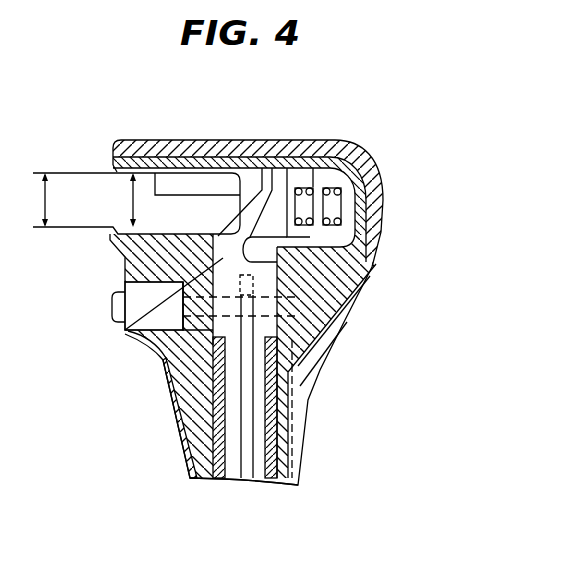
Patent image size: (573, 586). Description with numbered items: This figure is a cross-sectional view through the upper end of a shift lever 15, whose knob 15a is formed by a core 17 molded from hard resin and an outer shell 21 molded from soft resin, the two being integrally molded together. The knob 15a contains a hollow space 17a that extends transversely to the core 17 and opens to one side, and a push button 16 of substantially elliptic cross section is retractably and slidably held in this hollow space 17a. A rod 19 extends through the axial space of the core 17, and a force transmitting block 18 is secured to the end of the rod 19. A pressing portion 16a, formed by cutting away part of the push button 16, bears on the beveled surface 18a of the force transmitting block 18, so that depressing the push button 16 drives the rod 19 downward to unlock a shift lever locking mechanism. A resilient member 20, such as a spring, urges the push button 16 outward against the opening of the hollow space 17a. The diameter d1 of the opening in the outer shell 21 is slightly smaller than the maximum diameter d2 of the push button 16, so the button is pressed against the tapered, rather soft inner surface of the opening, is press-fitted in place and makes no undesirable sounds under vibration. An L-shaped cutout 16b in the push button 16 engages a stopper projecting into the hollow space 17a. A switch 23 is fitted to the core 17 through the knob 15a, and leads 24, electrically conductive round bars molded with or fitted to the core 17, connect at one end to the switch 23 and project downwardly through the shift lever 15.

The shift lever 15 is at (173, 486).
The knob 15a is at (319, 132).
The push button 16 is at (63, 203).
The pressing portion 16a is at (245, 216).
The L-shaped cutout 16b is at (198, 195).
The core 17 is at (320, 268).
The hollow space 17a is at (145, 165).
The force transmitting block 18 is at (148, 328).
The beveled surface 18a is at (268, 180).
The rod 19 is at (243, 437).
The resilient member 20 is at (333, 150).
The outer shell 21 is at (325, 318).
The switch 23 is at (112, 306).
The leads 24 is at (302, 409).
The diameter of the opening of the outer shell d1 is at (34, 200).
The maximum diameter of the push button d2 is at (125, 200).